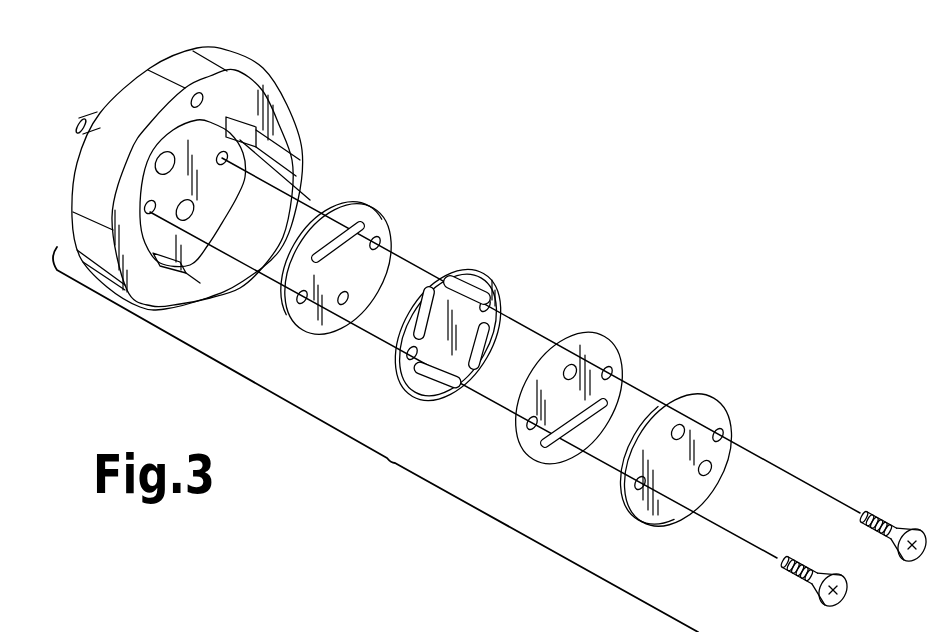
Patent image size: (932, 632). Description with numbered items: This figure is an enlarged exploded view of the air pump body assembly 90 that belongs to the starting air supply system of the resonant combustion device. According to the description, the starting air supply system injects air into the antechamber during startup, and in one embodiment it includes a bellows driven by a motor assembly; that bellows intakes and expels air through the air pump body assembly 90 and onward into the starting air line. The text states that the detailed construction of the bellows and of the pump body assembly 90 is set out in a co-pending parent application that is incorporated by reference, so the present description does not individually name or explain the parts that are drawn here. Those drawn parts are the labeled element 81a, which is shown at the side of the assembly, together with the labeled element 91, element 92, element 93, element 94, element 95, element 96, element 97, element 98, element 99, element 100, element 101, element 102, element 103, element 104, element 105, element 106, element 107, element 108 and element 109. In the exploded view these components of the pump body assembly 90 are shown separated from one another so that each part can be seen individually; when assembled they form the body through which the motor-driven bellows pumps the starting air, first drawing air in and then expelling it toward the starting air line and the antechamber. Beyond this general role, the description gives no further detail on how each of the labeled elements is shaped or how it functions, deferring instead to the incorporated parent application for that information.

The pin 81a is at (97, 118).
The air pump body assembly 90 is at (388, 460).
The housing 91 is at (84, 220).
The housing bottom portion 92 is at (165, 308).
The housing top portion 93 is at (148, 70).
The key rib 94 is at (220, 125).
The hole 95 is at (189, 213).
The hole 96 is at (157, 167).
The plate 97 is at (498, 269).
The cutout 98 is at (459, 380).
The cutout 99 is at (463, 270).
The plate 100 is at (389, 203).
The hole 101 is at (344, 318).
The slot 102 is at (358, 220).
The plate 103 is at (617, 333).
The slot 104 is at (563, 438).
The hole 105 is at (576, 362).
The plate 106 is at (663, 528).
The screw 107 is at (901, 524).
The hole 108 is at (713, 471).
The hole 109 is at (687, 426).